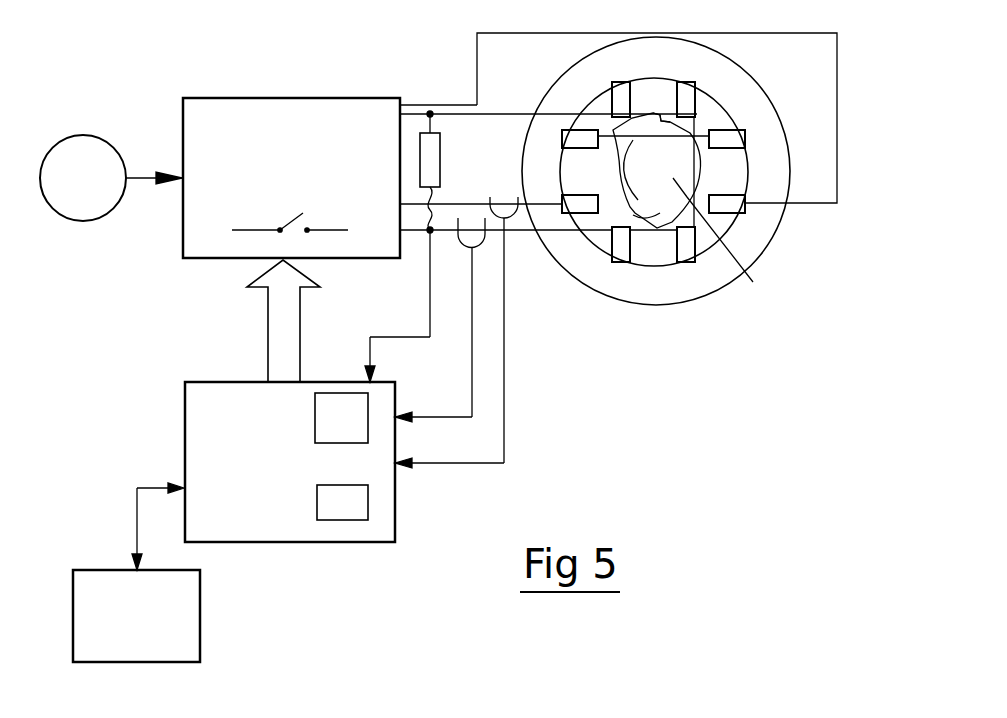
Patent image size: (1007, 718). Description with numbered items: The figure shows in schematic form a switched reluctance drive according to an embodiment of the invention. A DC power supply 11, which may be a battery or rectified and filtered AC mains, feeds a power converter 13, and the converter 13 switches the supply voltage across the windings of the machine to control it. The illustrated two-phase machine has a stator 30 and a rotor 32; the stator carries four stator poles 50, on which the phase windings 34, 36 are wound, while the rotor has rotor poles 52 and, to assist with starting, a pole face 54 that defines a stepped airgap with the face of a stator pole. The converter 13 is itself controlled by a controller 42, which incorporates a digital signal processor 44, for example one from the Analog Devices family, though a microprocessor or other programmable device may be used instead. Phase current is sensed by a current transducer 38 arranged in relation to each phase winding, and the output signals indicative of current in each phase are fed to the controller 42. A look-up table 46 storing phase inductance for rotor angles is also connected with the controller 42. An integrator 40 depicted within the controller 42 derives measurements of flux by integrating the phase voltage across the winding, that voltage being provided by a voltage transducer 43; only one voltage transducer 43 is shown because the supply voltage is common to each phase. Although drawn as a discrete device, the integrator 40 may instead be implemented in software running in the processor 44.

The DC power supply 11 is at (82, 130).
The power converter 13 is at (230, 93).
The stator 30 is at (560, 87).
The rotor 32 is at (732, 239).
The phase winding 34 is at (720, 207).
The phase winding 36 is at (623, 252).
The current transducer 38 is at (480, 252).
The integrator 40 is at (333, 405).
The controller 42 is at (183, 403).
The voltage transducer 43 is at (440, 141).
The digital signal processor 44 is at (322, 507).
The look-up table 46 is at (102, 570).
The stator poles 50 is at (667, 102).
The rotor poles 52 is at (652, 170).
The pole face 54 is at (665, 122).